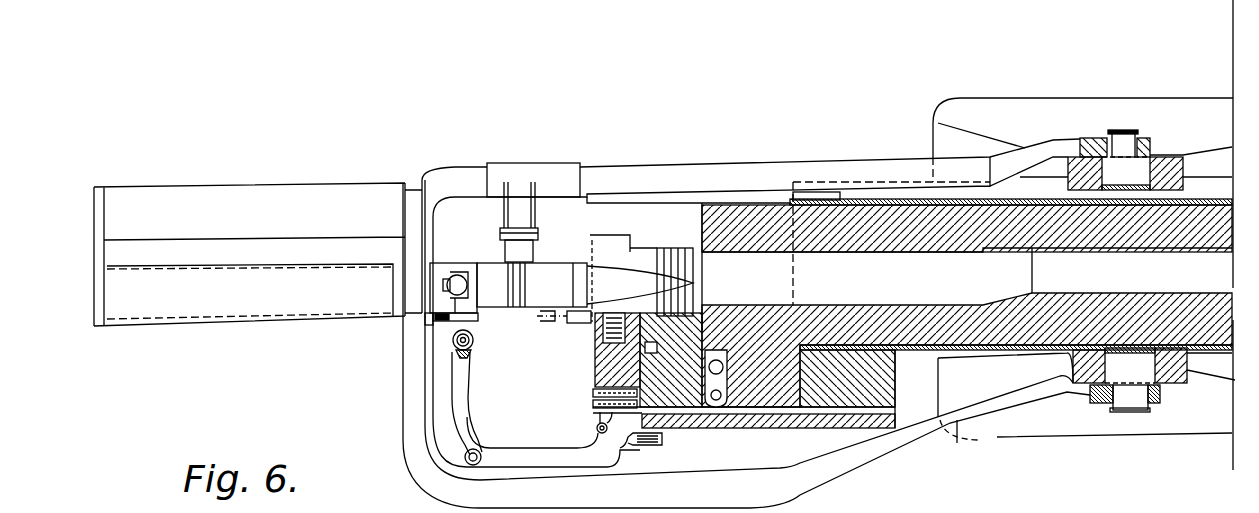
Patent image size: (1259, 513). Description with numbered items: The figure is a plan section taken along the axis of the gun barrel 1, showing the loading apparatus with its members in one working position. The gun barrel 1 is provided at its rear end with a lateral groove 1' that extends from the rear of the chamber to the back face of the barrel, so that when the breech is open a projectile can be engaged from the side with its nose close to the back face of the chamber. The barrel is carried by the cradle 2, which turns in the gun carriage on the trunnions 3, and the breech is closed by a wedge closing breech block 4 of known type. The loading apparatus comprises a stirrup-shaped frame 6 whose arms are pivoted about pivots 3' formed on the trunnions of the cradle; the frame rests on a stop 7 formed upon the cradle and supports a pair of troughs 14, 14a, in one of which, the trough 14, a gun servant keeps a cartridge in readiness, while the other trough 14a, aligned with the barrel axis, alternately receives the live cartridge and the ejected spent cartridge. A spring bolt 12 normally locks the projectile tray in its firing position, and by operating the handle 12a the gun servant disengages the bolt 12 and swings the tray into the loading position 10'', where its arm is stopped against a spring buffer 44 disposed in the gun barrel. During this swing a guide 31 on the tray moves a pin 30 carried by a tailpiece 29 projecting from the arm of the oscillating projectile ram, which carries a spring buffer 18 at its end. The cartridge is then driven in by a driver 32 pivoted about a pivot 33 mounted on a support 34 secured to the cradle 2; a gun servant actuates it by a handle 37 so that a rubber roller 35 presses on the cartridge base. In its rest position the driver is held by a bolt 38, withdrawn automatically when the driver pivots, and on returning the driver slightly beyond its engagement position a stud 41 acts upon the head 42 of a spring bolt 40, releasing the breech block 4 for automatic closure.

The gun barrel 1 is at (950, 264).
The lateral groove 1' is at (634, 224).
The cradle 2 is at (876, 377).
The trunnions 3 is at (1127, 157).
The pivots 3' is at (1115, 127).
The wedge closing breech block 4 is at (594, 353).
The frame 6 is at (676, 163).
The stop 7 is at (832, 194).
The loading position of projectile tray 10'' is at (575, 279).
The spring bolt 12 is at (521, 253).
The operating handle 12a is at (503, 237).
The cartridge trough 14 is at (252, 192).
The cartridge trough 14a is at (292, 322).
The spring buffer 18 is at (450, 262).
The tailpiece 29 is at (428, 320).
The pin 30 is at (434, 322).
The guide 31 is at (477, 321).
The driver 32 is at (458, 398).
The pivot 33 is at (596, 429).
The support 34 is at (751, 428).
The rubber roller 35 is at (472, 351).
The handle 37 is at (481, 452).
The bolt 38 is at (632, 447).
The spring bolt 40 is at (645, 412).
The stud 41 is at (593, 418).
The head 42 is at (593, 393).
The spring buffer 44 is at (592, 330).